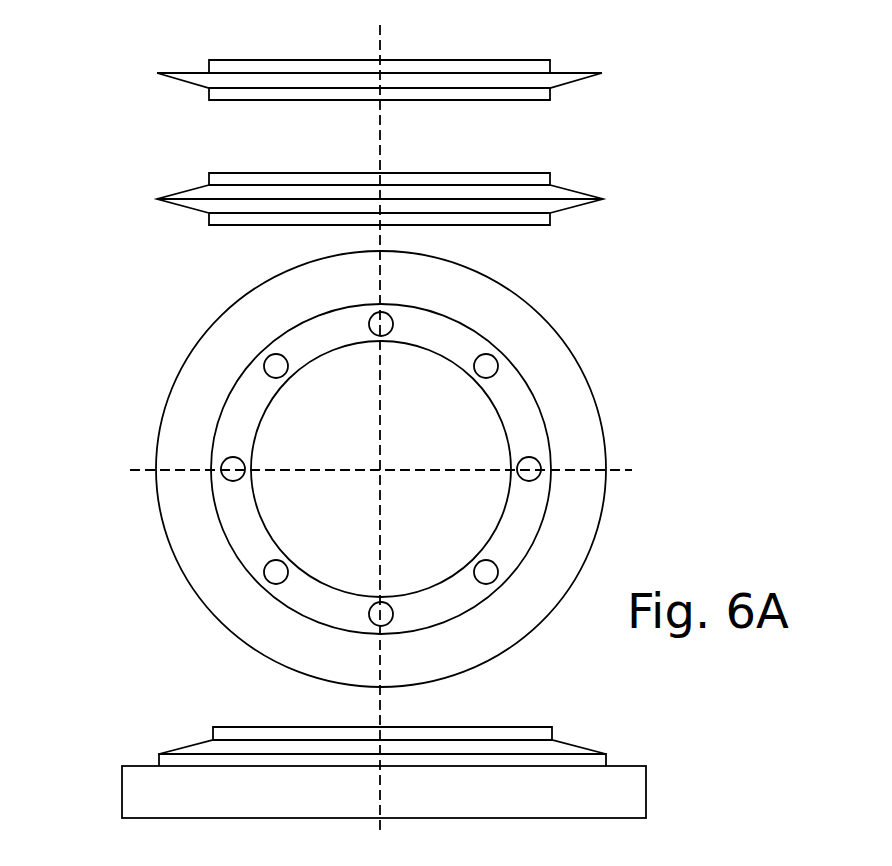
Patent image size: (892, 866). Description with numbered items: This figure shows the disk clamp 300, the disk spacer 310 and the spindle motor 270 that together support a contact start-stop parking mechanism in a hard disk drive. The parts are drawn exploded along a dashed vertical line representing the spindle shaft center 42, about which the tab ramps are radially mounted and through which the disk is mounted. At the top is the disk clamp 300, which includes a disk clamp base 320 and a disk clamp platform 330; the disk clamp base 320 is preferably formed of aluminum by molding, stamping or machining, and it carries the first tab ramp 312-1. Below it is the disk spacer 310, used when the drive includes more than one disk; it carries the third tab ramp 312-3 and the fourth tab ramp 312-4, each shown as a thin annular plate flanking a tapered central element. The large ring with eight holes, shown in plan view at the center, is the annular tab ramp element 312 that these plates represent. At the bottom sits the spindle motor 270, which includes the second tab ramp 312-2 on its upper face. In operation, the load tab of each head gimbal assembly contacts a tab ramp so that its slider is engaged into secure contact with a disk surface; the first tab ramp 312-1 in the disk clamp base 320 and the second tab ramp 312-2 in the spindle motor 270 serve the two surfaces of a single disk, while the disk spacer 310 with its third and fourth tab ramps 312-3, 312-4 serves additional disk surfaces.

The disk clamp 300 is at (393, 73).
The disk spacer 310 is at (348, 201).
The disk clamp base 320 is at (454, 101).
The disk clamp platform 330 is at (432, 60).
The spindle shaft center 42 is at (380, 132).
The first tab ramp 312-1 is at (572, 81).
The third tab ramp 312-3 is at (572, 185).
The fourth tab ramp 312-4 is at (572, 213).
The annular spacer plate with holes 312 is at (381, 469).
The second tab ramp 312-2 is at (580, 746).
The spindle motor 270 is at (351, 757).